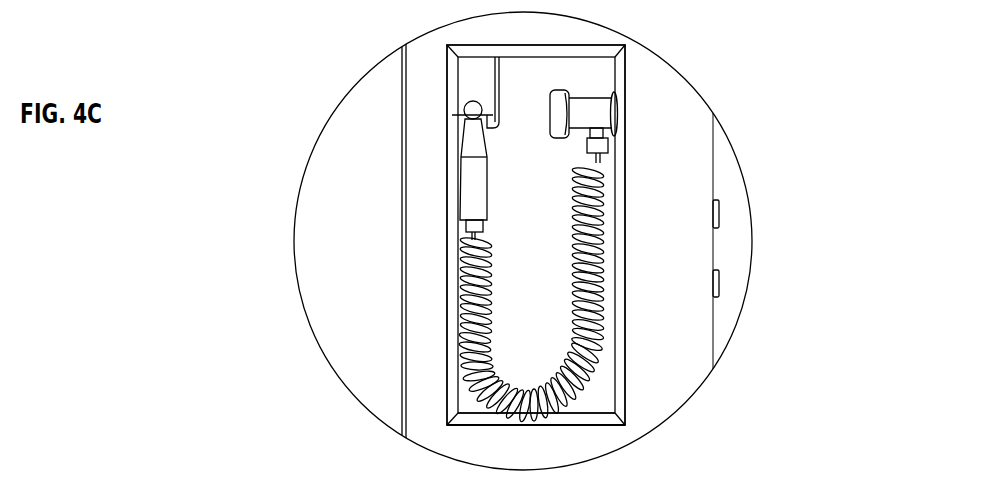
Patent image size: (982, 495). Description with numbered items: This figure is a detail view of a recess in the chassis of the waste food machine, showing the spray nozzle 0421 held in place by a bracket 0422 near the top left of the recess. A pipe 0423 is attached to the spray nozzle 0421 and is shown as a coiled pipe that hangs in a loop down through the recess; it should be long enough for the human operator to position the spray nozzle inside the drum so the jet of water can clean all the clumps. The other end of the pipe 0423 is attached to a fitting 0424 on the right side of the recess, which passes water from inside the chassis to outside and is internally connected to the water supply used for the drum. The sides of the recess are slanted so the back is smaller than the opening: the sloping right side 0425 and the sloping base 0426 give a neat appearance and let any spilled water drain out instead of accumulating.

The spray nozzle 0421 is at (466, 175).
The bracket 0422 is at (493, 87).
The pipe 0423 is at (461, 339).
The fitting 0424 is at (614, 113).
The sloping right side of the recess 0425 is at (630, 243).
The sloping base of the recess 0426 is at (585, 418).